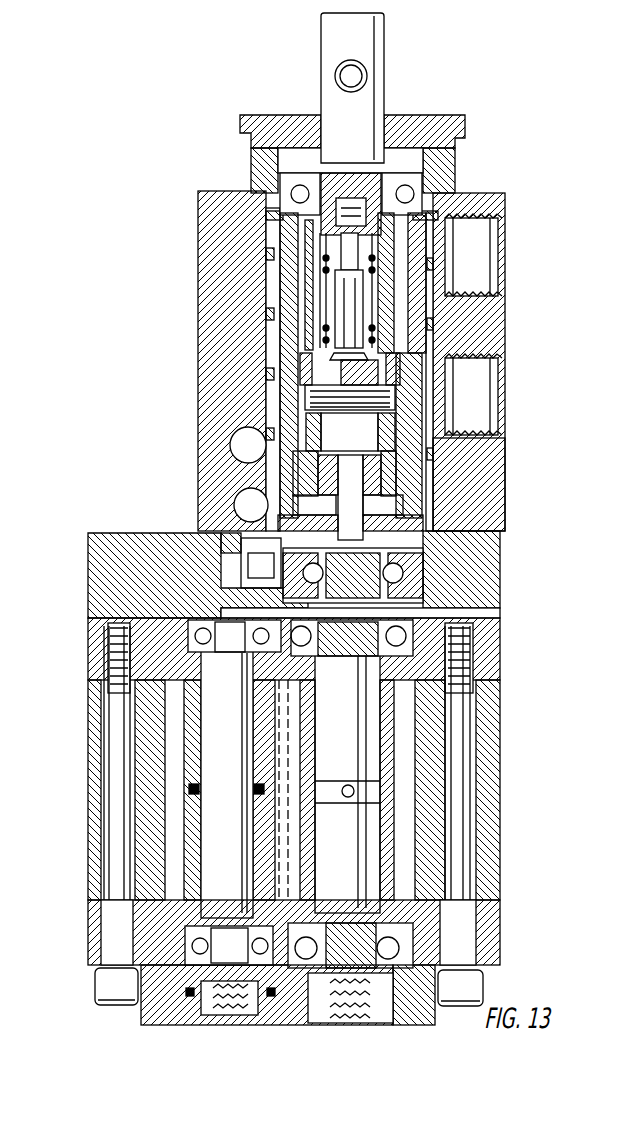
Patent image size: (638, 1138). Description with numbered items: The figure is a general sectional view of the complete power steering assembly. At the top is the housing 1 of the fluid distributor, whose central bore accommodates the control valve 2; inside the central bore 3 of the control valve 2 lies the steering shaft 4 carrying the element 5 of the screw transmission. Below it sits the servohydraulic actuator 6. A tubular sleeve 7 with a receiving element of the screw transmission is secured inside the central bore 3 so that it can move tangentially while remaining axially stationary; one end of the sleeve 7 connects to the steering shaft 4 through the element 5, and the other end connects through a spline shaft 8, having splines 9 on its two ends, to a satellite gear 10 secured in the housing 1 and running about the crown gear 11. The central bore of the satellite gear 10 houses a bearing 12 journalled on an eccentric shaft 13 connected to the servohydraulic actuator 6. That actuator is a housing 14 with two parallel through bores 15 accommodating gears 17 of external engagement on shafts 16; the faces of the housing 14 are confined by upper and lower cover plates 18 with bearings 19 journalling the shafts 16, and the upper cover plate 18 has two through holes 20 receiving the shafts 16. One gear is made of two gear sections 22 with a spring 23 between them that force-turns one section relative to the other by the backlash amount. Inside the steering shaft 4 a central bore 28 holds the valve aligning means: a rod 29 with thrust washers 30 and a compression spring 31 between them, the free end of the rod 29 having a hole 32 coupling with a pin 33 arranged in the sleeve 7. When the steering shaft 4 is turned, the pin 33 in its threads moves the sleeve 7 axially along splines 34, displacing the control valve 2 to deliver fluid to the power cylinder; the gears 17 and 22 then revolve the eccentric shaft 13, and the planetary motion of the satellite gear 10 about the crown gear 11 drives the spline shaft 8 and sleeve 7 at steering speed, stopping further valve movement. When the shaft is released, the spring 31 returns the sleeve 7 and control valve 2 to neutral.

The housing 1 is at (203, 347).
The control valve 2 is at (465, 205).
The central bore 3 is at (286, 254).
The steering shaft 4 is at (360, 91).
The element of screw transmission 5 is at (350, 398).
The servohydraulic actuator 6 is at (73, 750).
The tubular sleeve 7 is at (430, 407).
The spline shaft 8 is at (344, 410).
The splines 9 is at (422, 490).
The satellite gear 10 is at (470, 550).
The crown gear 11 is at (172, 533).
The bearing 12 is at (422, 570).
The eccentric shaft 13 is at (344, 600).
The housing 14 is at (474, 822).
The through bores 15 is at (139, 720).
The shafts 16 is at (422, 862).
The gears of external engagement 17 is at (422, 799).
The cover plates 18 is at (117, 606).
The bearings 19 is at (422, 643).
The through holes 20 is at (110, 642).
The gear sections 22 is at (176, 800).
The spring 23 is at (251, 781).
The central bore 28 is at (295, 293).
The rod 29 is at (420, 300).
The thrust washers 30 is at (300, 174).
The compression spring 31 is at (425, 335).
The hole 32 is at (342, 433).
The pin 33 is at (440, 352).
The splines 34 is at (350, 495).